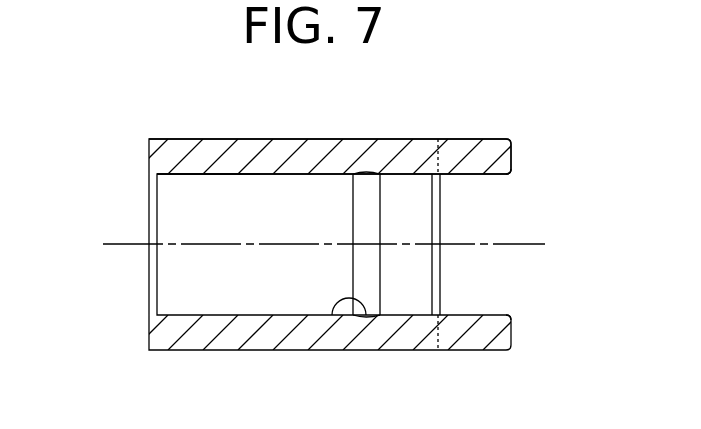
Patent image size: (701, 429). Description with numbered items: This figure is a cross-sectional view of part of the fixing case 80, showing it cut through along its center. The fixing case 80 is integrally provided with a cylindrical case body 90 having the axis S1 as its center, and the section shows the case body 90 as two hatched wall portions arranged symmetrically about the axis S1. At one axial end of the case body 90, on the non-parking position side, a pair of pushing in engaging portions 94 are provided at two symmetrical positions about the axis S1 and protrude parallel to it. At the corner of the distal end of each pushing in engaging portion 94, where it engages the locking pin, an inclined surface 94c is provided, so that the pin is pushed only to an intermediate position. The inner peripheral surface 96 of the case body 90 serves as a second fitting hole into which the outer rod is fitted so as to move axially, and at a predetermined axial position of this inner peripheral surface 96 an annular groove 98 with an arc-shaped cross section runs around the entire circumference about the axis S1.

The fixing case 80 is at (392, 116).
The case body 90 is at (295, 162).
The pushing in engaging portion 94 is at (477, 150).
The inclined surface 94c is at (507, 175).
The inner peripheral surface 96 is at (224, 176).
The annular groove 98 is at (349, 298).
The axis S1 is at (304, 245).